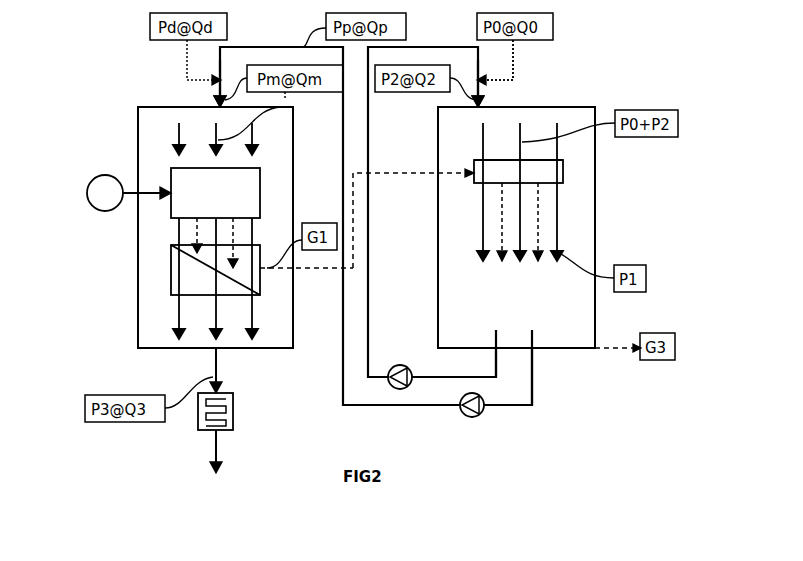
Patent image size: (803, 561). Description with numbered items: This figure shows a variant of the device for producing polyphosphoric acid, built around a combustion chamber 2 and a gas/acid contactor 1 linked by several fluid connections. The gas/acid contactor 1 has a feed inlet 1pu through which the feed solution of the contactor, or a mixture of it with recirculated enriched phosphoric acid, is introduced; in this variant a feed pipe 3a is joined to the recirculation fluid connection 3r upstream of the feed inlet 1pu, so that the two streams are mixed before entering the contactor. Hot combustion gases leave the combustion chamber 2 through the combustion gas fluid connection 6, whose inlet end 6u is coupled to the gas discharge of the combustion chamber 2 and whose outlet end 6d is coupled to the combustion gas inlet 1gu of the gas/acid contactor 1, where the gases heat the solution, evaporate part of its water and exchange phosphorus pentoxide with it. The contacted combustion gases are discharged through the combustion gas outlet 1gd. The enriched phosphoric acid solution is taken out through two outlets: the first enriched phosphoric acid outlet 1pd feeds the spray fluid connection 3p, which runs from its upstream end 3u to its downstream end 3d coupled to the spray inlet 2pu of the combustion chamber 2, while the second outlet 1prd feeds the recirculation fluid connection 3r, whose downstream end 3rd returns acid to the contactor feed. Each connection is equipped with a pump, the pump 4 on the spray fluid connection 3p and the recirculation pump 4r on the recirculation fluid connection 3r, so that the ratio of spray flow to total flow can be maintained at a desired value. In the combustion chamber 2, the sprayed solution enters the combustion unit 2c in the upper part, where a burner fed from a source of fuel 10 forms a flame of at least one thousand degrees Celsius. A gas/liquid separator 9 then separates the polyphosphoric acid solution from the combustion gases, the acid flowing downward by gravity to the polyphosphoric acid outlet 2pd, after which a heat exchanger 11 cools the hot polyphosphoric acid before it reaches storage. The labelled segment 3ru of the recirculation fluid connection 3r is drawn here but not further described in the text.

The gas/acid contactor 1 is at (438, 305).
The combustion chamber 2 is at (138, 283).
The combustion unit 2c is at (170, 175).
The spray inlet 2pu is at (218, 103).
The polyphosphoric acid outlet 2pd is at (205, 348).
The feed pipe 3a is at (513, 70).
The downstream end of the spray fluid connection 3d is at (173, 78).
The spray fluid connection 3p is at (290, 47).
The recirculation fluid connection 3r is at (458, 47).
The downstream end of the recirculation fluid connection 3rd is at (459, 107).
The recirculation upstream line 3ru is at (519, 344).
The upstream end of the spray fluid connection 3u is at (575, 376).
The pump 4 is at (462, 412).
The recirculation pump 4r is at (397, 365).
The combustion gas fluid connection 6 is at (352, 205).
The inlet of the combustion gas connection 6u is at (260, 270).
The outlet of the combustion gas connection 6d is at (493, 188).
The gas/liquid separator 9 is at (171, 283).
The source of fuel 10 is at (105, 212).
The heat exchanger 11 is at (233, 410).
The feed inlet 1pu is at (477, 107).
The second enriched phosphoric acid outlet 1prd is at (491, 329).
The combustion gas inlet 1gu is at (543, 186).
The combustion gas outlet 1gd is at (595, 343).
The enriched phosphoric acid outlet 1pd is at (533, 352).